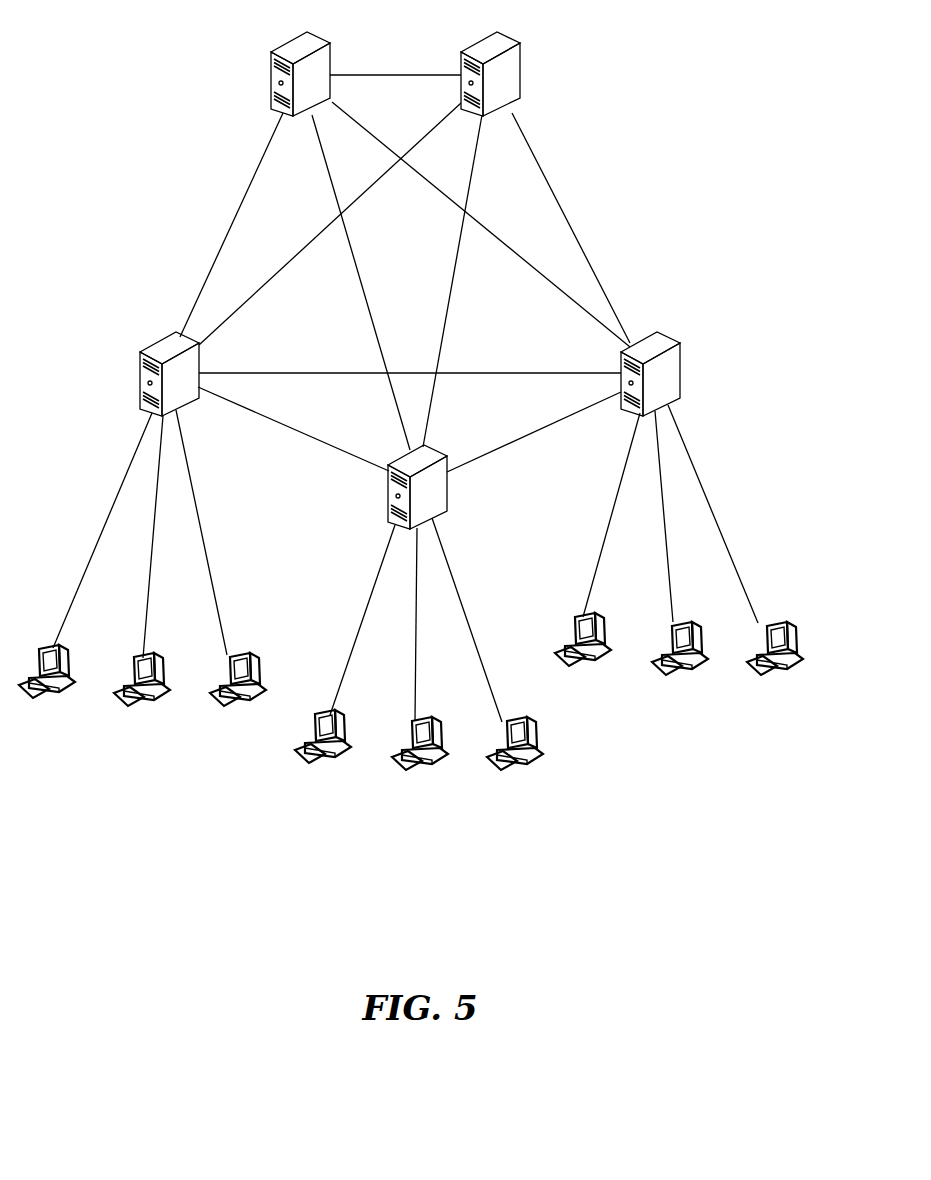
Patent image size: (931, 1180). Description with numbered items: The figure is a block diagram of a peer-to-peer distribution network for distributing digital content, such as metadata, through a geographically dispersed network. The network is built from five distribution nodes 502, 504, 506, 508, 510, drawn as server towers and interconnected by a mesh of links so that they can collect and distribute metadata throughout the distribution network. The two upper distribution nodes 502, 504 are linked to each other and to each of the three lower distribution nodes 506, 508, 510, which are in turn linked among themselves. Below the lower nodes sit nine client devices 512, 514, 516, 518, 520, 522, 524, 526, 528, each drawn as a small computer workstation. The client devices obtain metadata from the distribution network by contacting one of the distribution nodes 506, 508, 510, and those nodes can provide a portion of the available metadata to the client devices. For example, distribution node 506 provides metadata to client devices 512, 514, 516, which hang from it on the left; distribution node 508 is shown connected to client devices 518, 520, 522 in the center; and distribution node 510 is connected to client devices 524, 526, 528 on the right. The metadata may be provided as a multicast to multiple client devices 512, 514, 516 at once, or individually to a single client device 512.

The distribution node 502 is at (327, 40).
The distribution node 504 is at (513, 40).
The distribution node 506 is at (150, 345).
The distribution node 508 is at (442, 455).
The distribution node 510 is at (678, 337).
The client device 512 is at (53, 650).
The client device 514 is at (153, 658).
The client device 516 is at (250, 655).
The client device 518 is at (333, 710).
The client device 520 is at (430, 718).
The client device 522 is at (525, 718).
The client device 524 is at (593, 615).
The client device 526 is at (690, 622).
The client device 528 is at (785, 622).